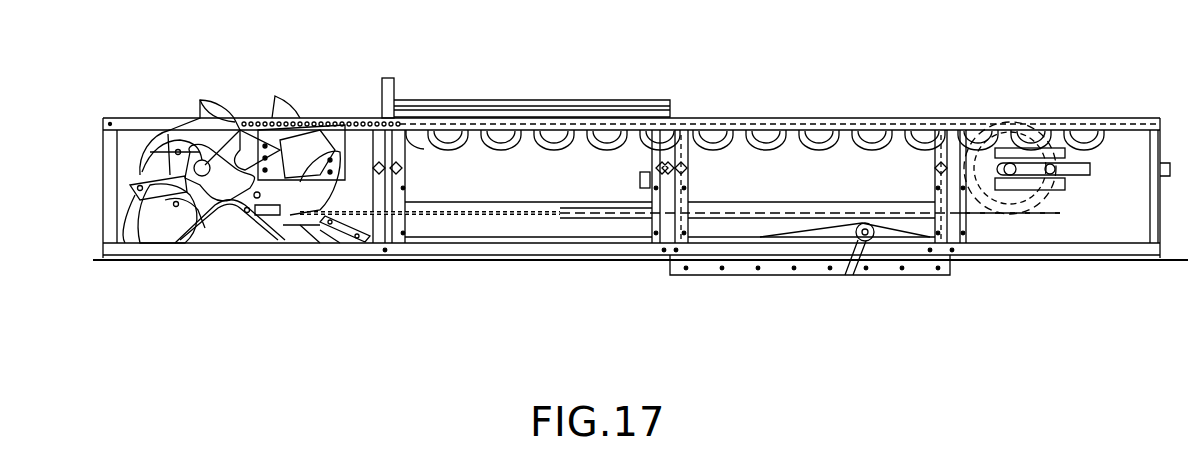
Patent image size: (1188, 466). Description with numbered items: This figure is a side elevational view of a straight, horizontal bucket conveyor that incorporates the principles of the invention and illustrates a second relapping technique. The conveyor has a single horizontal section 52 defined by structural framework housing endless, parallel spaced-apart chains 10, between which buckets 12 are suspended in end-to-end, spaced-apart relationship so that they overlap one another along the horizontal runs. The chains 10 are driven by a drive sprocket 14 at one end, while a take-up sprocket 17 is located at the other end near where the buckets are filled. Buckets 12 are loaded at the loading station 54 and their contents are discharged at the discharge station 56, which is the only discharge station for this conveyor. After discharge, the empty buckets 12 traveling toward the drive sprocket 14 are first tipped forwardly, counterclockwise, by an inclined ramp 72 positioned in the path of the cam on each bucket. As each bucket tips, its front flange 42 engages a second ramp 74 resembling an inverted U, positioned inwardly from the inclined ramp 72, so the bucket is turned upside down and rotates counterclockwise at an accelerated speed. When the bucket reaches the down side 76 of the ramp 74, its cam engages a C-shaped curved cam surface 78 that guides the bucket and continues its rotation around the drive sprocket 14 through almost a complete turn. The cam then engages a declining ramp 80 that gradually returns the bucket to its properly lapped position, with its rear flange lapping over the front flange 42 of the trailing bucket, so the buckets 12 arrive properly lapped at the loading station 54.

The chains 10 is at (482, 260).
The buckets 12 is at (885, 128).
The drive sprocket 14 is at (225, 152).
The take-up sprocket 17 is at (1003, 135).
The front flange 42 is at (352, 210).
The horizontal conveyor section 52 is at (730, 108).
The loading station 54 is at (535, 100).
The discharge station 56 is at (781, 282).
The inclined ramp 72 is at (325, 258).
The second ramp 74 is at (268, 258).
The down side of ramp 76 is at (150, 258).
The curved cam surface 78 is at (130, 258).
The declining ramp 80 is at (300, 170).